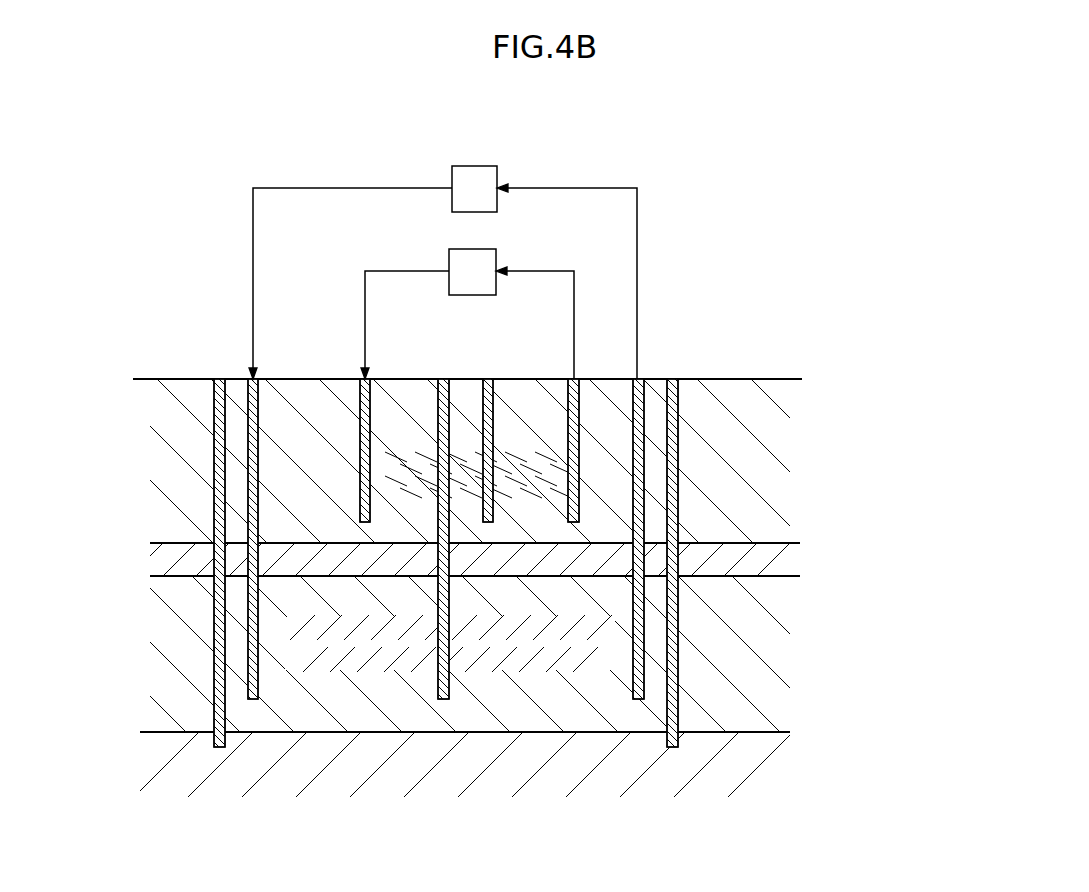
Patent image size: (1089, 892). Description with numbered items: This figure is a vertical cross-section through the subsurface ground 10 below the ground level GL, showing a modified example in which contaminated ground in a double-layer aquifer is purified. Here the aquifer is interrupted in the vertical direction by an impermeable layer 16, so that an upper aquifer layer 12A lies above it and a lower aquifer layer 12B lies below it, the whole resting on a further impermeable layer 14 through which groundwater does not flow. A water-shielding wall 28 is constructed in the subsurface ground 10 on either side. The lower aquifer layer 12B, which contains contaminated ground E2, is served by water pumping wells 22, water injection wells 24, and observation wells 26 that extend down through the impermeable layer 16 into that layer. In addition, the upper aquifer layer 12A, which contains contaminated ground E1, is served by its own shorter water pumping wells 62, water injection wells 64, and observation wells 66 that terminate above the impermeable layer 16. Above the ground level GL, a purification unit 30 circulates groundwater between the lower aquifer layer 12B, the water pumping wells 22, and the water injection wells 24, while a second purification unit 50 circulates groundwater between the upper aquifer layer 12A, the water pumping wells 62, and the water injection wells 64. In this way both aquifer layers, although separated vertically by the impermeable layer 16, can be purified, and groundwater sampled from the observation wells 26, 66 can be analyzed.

The subsurface ground 10 is at (568, 474).
The ground level GL is at (733, 379).
The upper aquifer layer 12A is at (755, 458).
The lower aquifer layer 12B is at (768, 606).
The impermeable layer 16 is at (791, 558).
The impermeable layer 14 is at (740, 757).
The water-shielding wall 28 is at (213, 673).
The water injection wells 24 is at (259, 684).
The observation wells 26 is at (437, 694).
The water pumping wells 22 is at (632, 687).
The water injection wells 64 is at (360, 402).
The observation wells 66 is at (493, 410).
The water pumping wells 62 is at (579, 447).
The purification unit 30 is at (476, 166).
The purification unit 50 is at (473, 296).
The contaminated ground E1 is at (418, 468).
The contaminated ground E2 is at (488, 652).